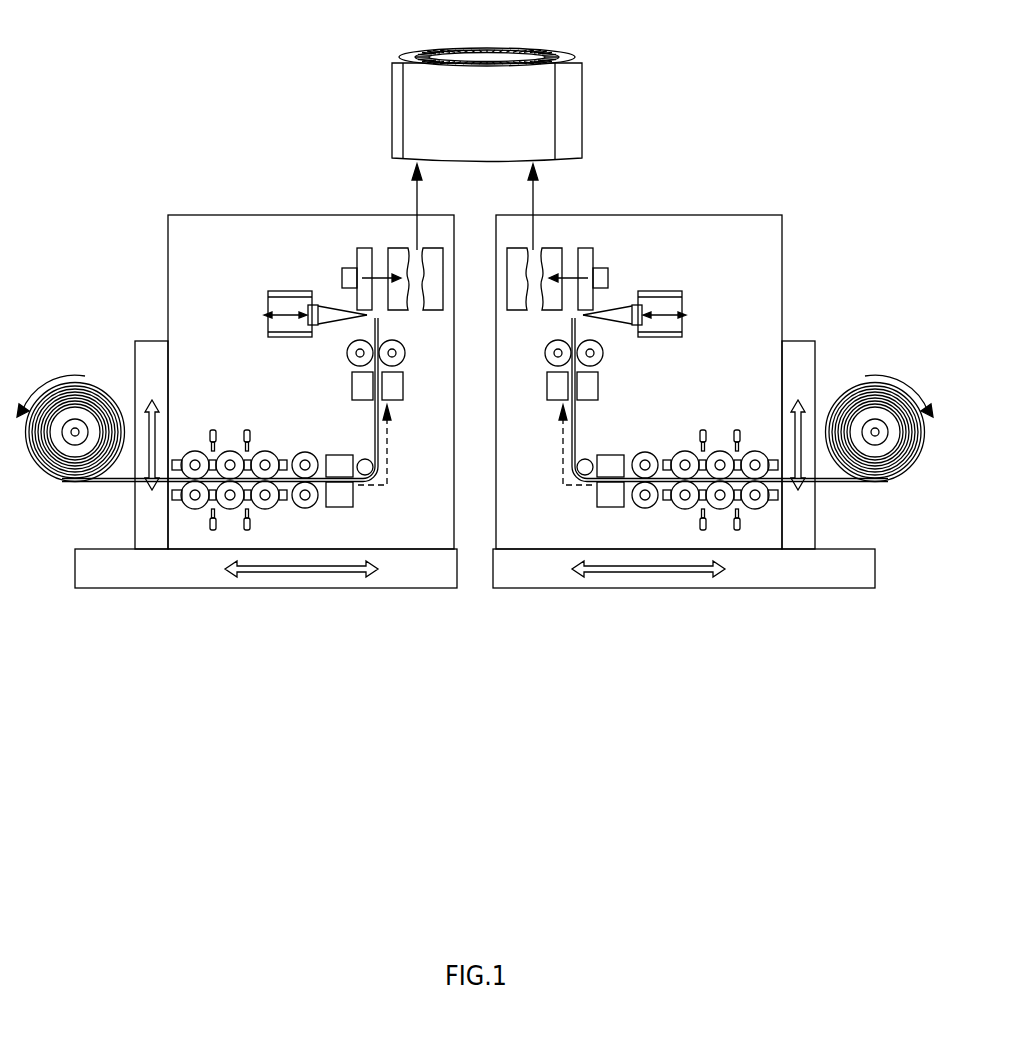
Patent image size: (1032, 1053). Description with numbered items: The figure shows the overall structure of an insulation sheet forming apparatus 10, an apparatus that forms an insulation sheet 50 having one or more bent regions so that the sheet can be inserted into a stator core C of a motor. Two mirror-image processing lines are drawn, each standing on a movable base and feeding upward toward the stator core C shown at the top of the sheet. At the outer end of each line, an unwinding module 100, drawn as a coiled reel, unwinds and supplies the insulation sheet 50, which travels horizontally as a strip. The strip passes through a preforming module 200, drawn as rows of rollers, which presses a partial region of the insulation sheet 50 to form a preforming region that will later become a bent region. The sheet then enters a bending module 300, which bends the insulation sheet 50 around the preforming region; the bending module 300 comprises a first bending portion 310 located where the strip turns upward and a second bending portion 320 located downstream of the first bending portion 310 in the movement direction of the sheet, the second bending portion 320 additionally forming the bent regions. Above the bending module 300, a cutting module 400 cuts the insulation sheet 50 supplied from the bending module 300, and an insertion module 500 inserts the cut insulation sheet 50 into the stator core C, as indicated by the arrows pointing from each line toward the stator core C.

The insulation sheet forming apparatus 10 is at (115, 100).
The stator core C is at (582, 110).
The insulation sheet 50 is at (357, 483).
The unwinding module 100 is at (72, 362).
The preforming module 200 is at (216, 420).
The bending module 300 is at (316, 423).
The first bending portion 310 is at (343, 455).
The second bending portion 320 is at (357, 380).
The cutting module 400 is at (276, 285).
The insertion module 500 is at (380, 233).